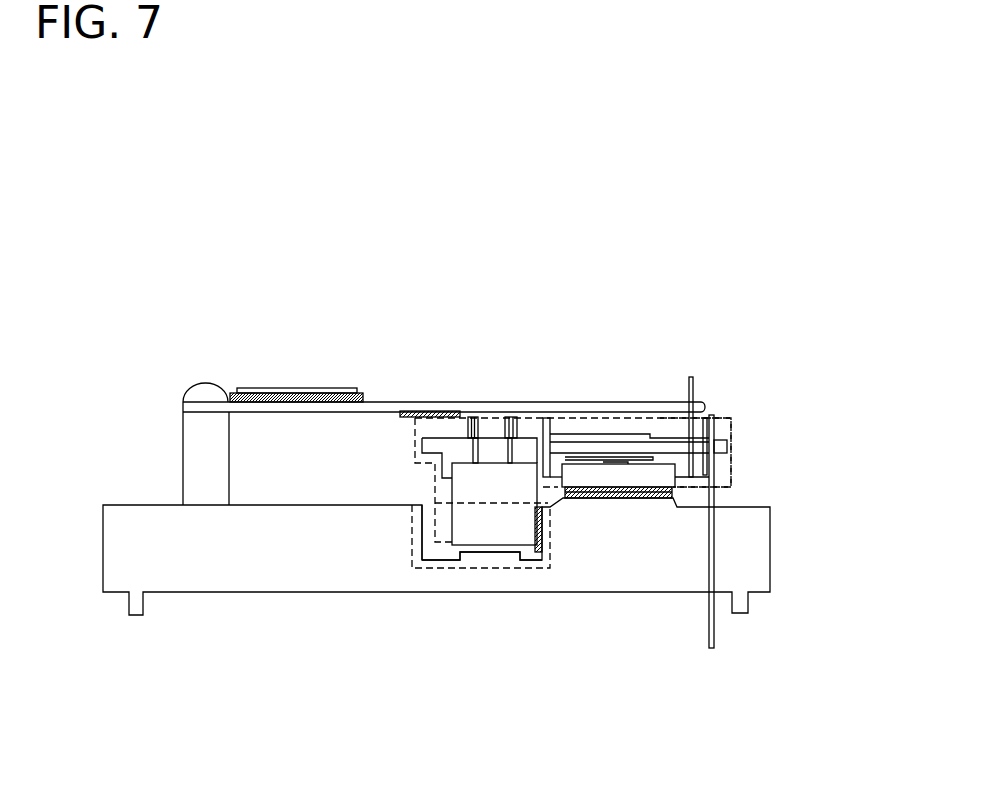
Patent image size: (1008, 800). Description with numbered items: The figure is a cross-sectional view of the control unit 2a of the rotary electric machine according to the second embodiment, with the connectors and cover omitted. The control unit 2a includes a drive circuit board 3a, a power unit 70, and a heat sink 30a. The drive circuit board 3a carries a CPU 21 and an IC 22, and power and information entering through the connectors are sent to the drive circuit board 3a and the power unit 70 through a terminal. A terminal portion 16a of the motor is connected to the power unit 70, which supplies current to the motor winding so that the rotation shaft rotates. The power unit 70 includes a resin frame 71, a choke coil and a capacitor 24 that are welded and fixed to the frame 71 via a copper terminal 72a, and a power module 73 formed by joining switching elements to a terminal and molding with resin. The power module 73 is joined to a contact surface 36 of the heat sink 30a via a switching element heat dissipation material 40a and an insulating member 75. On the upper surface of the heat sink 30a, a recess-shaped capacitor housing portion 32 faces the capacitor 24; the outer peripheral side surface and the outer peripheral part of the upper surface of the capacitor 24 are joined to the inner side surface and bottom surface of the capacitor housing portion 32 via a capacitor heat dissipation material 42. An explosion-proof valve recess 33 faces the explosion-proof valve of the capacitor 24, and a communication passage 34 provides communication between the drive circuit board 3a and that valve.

The control unit 2a is at (683, 230).
The CPU 21 is at (268, 402).
The IC 22 is at (332, 392).
The drive circuit board 3a is at (410, 402).
The terminal 72a is at (505, 440).
The capacitor 24 is at (490, 485).
The power module 73 is at (605, 475).
The frame 71 is at (662, 442).
The power unit 70 is at (737, 423).
The terminal portion 16a is at (730, 492).
The heat sink 30a is at (747, 547).
The contact surface 36 is at (746, 595).
The communication passage 34 is at (423, 527).
The explosion-proof valve recess 33 is at (470, 553).
The capacitor housing portion 32 is at (488, 570).
The capacitor heat dissipation material 42 is at (545, 565).
The switching element heat dissipation material 40a is at (578, 498).
The insulating member 75 is at (610, 498).